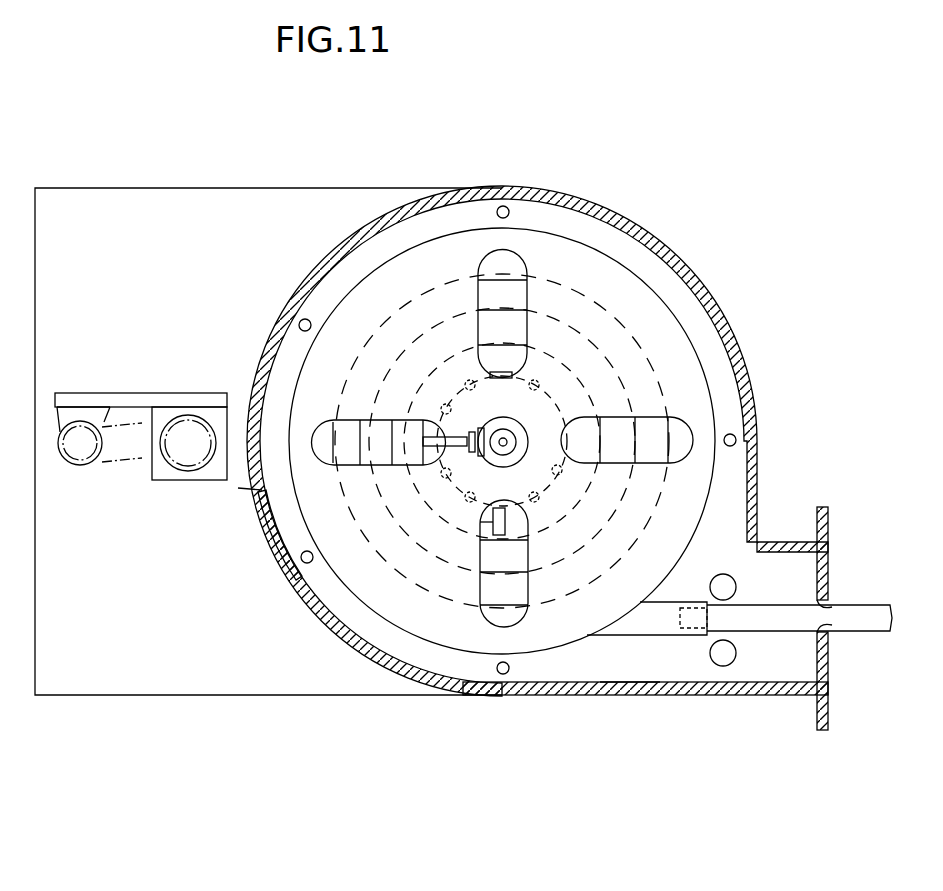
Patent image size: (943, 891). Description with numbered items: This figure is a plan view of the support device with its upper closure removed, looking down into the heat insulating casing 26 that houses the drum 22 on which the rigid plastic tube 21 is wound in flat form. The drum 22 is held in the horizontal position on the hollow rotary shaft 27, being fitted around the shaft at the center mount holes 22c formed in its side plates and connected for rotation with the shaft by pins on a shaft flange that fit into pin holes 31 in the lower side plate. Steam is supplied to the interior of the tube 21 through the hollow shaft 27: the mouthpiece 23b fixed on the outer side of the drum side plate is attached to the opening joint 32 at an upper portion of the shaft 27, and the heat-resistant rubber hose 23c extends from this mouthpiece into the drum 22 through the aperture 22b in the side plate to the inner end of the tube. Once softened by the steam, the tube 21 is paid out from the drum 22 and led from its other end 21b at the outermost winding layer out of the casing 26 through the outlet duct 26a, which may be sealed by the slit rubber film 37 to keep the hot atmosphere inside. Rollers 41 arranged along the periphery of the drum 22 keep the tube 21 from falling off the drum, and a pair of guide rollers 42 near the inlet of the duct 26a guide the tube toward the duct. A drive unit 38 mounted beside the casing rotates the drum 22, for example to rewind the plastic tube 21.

The rigid plastic tube 21 is at (865, 604).
The other end of the plastic tube 21b is at (627, 684).
The drum 22 is at (586, 255).
The aperture 22b is at (423, 441).
The center mount holes 22c is at (513, 460).
The mouthpiece 23b is at (445, 418).
The heat-resistant rubber hose 23c is at (432, 470).
The heat insulating casing 26 is at (712, 292).
The outlet duct 26a is at (776, 696).
The hollow rotary shaft 27 is at (522, 428).
The pin holes 31 is at (560, 474).
The opening joint 32 is at (490, 418).
The rubber film 37 is at (830, 572).
The drive unit 38 is at (185, 476).
The rollers 41 is at (505, 206).
The guide rollers 42 is at (737, 586).